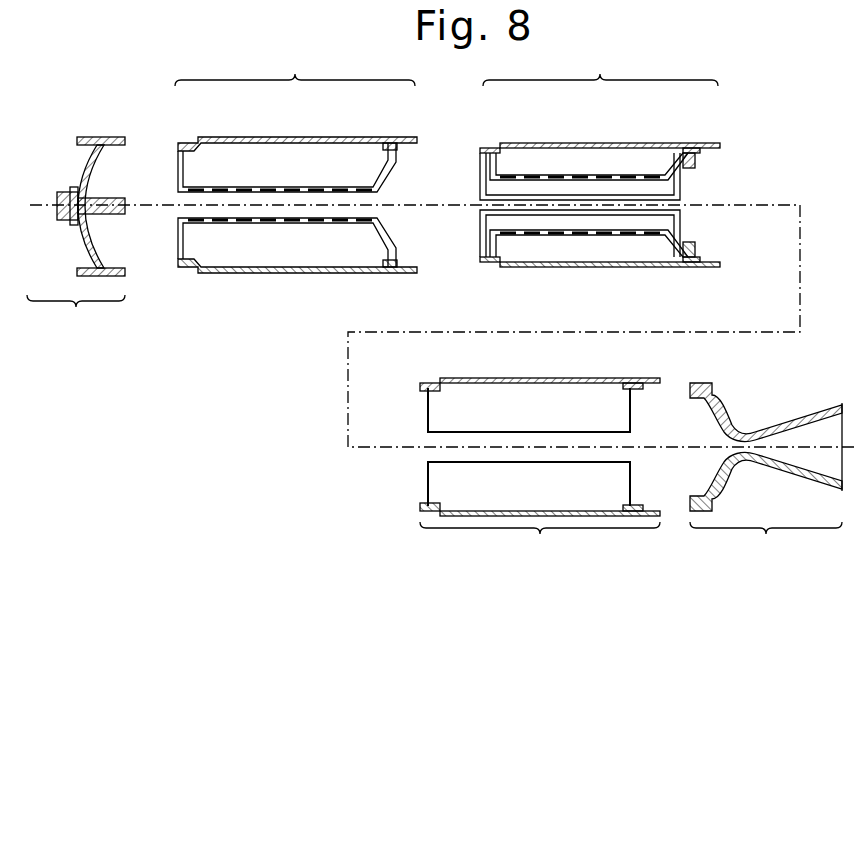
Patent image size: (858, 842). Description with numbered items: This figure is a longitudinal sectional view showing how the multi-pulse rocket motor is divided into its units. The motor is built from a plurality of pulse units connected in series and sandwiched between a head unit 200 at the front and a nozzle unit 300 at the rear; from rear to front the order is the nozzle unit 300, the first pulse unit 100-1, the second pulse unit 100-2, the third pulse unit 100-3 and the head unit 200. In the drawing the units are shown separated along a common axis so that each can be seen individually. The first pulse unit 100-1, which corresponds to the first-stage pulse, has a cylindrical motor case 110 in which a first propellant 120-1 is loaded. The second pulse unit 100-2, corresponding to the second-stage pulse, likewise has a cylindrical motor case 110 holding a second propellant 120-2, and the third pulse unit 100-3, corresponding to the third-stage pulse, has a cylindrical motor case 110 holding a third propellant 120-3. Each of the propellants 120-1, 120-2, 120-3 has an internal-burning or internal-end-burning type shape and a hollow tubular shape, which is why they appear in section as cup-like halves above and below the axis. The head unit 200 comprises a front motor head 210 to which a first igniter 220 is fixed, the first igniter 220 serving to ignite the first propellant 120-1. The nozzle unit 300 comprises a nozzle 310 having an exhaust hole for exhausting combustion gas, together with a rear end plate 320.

The motor case 110 is at (303, 137).
The first propellant 120-1 is at (670, 188).
The second propellant 120-2 is at (678, 163).
The third propellant 120-3 is at (358, 174).
The first pulse unit 100-1 is at (540, 536).
The second pulse unit 100-2 is at (600, 71).
The third pulse unit 100-3 is at (295, 71).
The head unit 200 is at (76, 230).
The front motor head 210 is at (86, 160).
The first igniter 220 is at (73, 224).
The nozzle unit 300 is at (766, 464).
The nozzle 310 is at (772, 472).
The end plate 320 is at (733, 425).